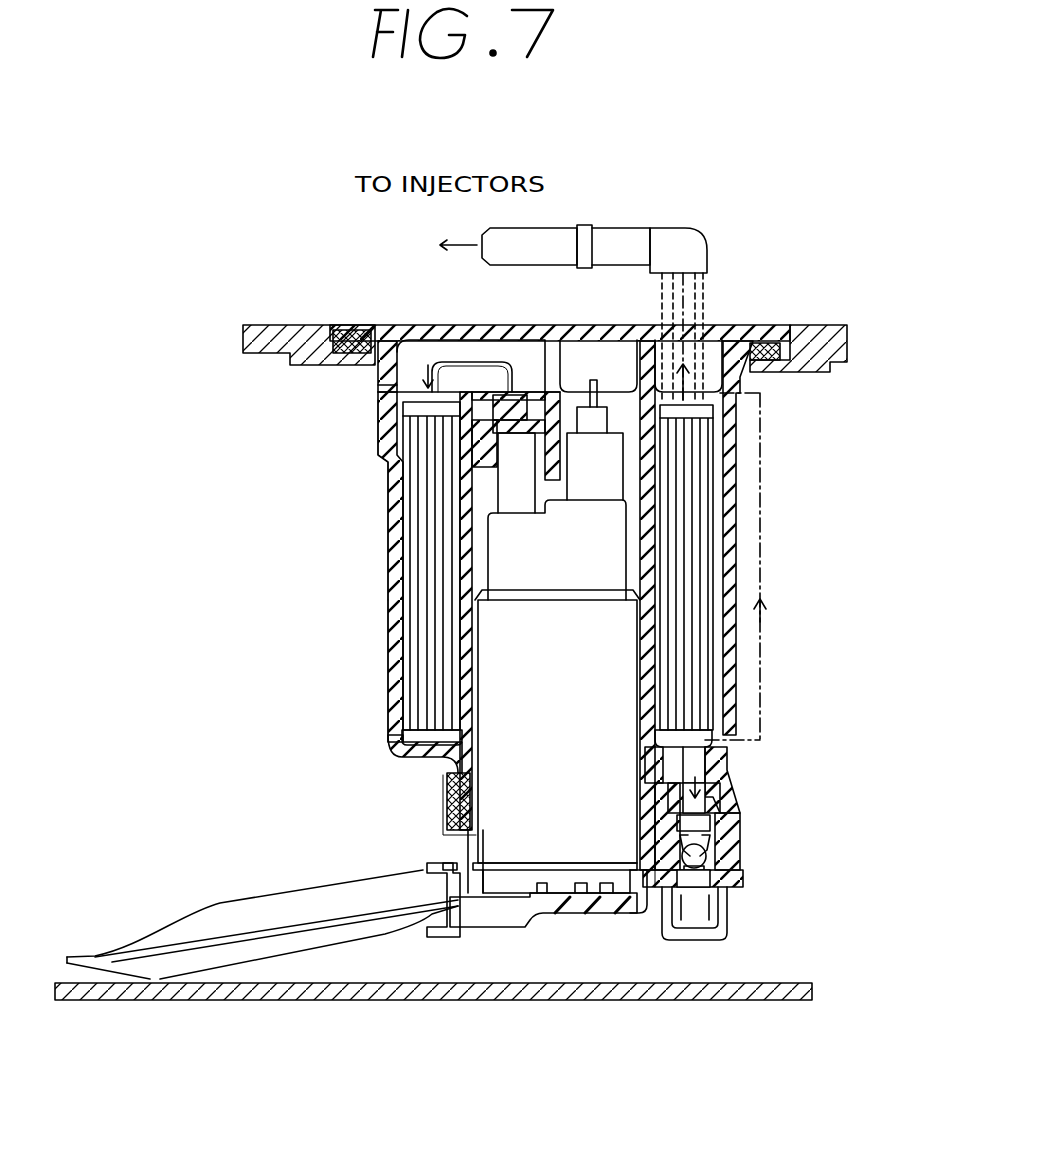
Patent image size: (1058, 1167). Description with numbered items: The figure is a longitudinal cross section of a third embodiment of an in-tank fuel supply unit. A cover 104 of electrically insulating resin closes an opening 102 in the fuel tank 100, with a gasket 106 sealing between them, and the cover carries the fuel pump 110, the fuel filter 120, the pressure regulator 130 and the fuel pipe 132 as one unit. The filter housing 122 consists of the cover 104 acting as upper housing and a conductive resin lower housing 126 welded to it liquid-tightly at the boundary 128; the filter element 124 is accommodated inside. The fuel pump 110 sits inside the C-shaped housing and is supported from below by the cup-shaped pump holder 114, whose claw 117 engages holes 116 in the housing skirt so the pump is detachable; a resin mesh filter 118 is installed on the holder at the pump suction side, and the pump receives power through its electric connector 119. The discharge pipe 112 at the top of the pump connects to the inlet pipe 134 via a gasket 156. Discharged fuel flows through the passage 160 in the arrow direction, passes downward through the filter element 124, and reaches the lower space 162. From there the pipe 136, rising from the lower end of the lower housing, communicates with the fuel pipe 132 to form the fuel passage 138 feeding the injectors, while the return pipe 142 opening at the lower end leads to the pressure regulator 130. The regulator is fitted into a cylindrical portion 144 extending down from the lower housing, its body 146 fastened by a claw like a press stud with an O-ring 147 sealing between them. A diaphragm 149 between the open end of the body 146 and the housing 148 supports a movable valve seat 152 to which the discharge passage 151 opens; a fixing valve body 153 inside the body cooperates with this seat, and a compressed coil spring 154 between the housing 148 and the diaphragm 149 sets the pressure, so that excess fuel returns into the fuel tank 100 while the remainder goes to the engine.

The fuel tank 100 is at (826, 335).
The opening 102 is at (788, 328).
The cover 104 is at (398, 330).
The gasket 106 is at (762, 345).
The fuel pump 110 is at (623, 665).
The discharge pipe 112 is at (497, 503).
The pump holder 114 is at (562, 907).
The holes 116 is at (447, 780).
The claw 117 is at (447, 800).
The mesh filter 118 is at (177, 925).
The electric connector 119 is at (600, 415).
The fuel filter 120 is at (367, 442).
The filter housing 122 is at (374, 520).
The filter element 124 is at (430, 620).
The lower housing 126 is at (393, 707).
The boundary 128 is at (370, 395).
The pressure regulator 130 is at (744, 923).
The fuel pipe 132 is at (620, 240).
The inlet pipe 134 is at (528, 400).
The pipe 136 is at (762, 487).
The fuel passage 138 is at (789, 429).
The return pipe 142 is at (713, 767).
The cylindrical portion 144 is at (740, 805).
The body 146 is at (740, 830).
The O-ring 147 is at (733, 807).
The housing 148 is at (728, 920).
The diaphragm 149 is at (740, 897).
The discharge passage 151 is at (697, 885).
The movable valve seat 152 is at (697, 868).
The fixing valve body 153 is at (737, 843).
The compressed coil spring 154 is at (686, 892).
The gasket 156 is at (483, 462).
The passage 160 is at (430, 345).
The lower space 162 is at (417, 735).